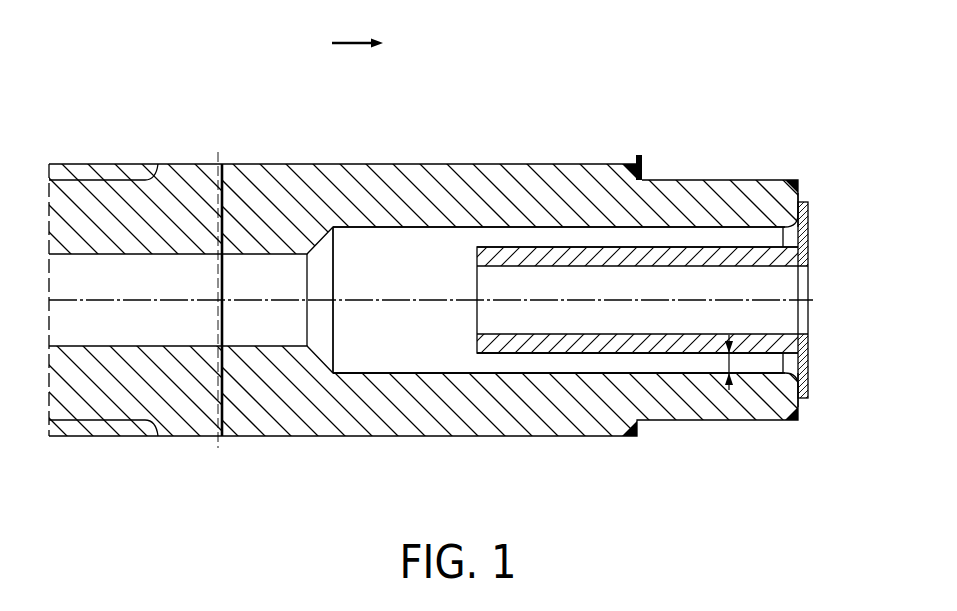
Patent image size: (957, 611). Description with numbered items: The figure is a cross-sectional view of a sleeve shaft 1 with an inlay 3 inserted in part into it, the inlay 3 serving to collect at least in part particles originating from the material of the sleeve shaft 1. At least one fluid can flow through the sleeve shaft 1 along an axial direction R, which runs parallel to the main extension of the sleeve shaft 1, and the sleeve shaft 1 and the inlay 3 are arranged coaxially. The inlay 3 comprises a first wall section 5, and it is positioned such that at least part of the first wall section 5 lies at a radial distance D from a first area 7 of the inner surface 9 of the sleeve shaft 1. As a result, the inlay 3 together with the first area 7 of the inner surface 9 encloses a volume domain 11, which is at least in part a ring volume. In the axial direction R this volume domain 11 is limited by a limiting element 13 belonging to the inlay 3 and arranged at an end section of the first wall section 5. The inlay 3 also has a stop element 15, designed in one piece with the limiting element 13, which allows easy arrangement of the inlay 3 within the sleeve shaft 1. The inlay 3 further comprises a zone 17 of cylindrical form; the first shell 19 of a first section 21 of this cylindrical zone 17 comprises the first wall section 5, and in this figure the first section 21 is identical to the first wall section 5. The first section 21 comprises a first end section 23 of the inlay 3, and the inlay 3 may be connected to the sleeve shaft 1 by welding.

The sleeve shaft 1 is at (142, 120).
The inlay 3 is at (826, 357).
The first wall section 5 is at (512, 357).
The first area 7 is at (710, 355).
The inner surface 9 is at (400, 255).
The volume domain 11 is at (497, 362).
The limiting element 13 is at (810, 220).
The stop element 15 is at (798, 198).
The zone of cylindrical form 17 is at (633, 268).
The first shell 19 is at (532, 255).
The first section 21 is at (597, 255).
The first end section 23 is at (465, 245).
The radial distance D is at (727, 348).
The axial direction R is at (357, 32).